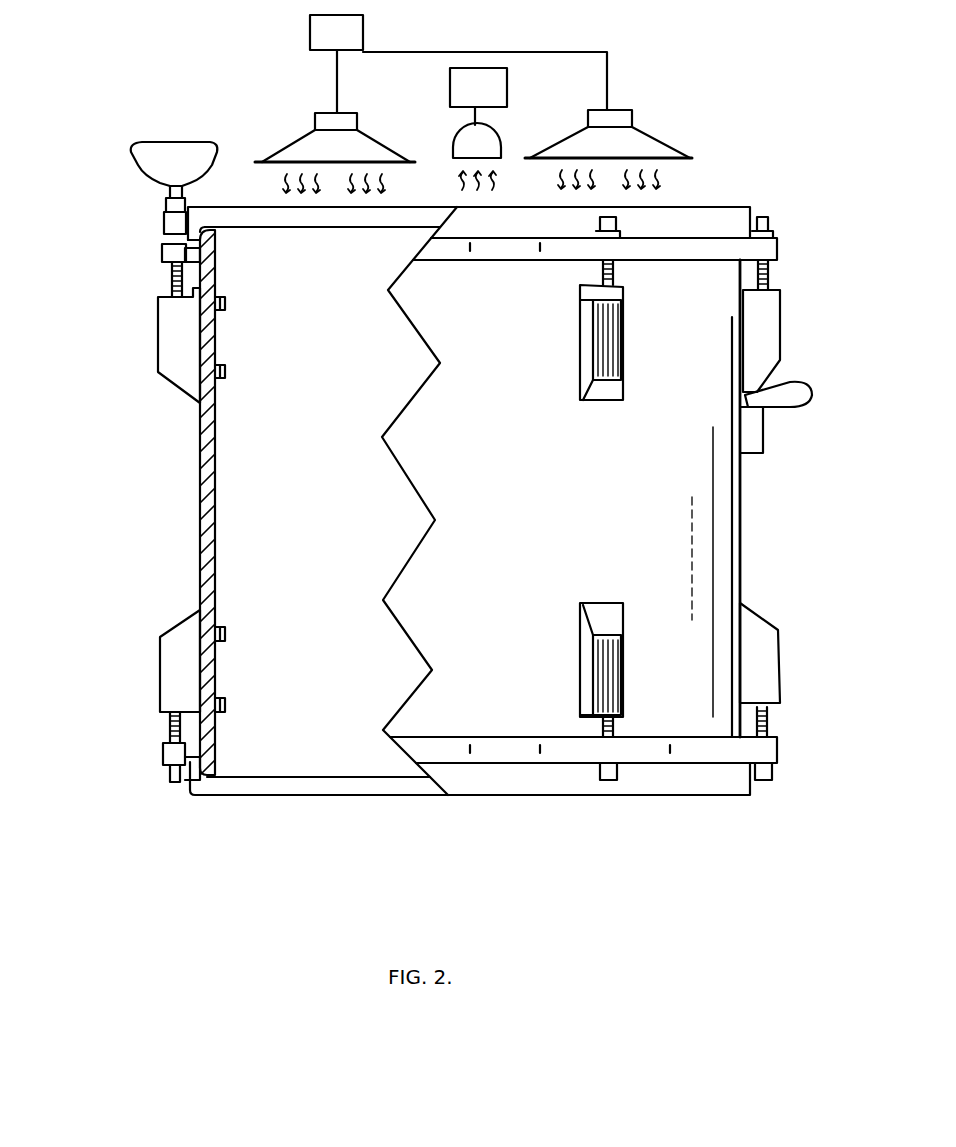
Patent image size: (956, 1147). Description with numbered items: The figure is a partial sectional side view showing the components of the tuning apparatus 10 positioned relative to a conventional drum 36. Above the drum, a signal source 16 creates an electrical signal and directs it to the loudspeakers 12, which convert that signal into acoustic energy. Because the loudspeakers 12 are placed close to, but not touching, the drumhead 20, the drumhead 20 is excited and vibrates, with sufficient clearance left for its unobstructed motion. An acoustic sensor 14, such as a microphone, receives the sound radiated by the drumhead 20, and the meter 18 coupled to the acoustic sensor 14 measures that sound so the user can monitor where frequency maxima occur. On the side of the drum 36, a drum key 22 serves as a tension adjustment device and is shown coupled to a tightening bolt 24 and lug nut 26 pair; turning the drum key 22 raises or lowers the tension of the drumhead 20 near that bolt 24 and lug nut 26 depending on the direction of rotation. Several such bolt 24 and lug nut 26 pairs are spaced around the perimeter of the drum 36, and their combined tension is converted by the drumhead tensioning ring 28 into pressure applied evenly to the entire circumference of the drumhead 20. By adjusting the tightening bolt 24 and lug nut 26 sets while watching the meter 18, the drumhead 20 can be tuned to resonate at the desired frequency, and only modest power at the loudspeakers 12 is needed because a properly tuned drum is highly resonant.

The apparatus 10 is at (200, 58).
The loudspeakers 12 is at (322, 110).
The acoustic sensor 14 is at (500, 140).
The signal source 16 is at (365, 42).
The meter 18 is at (450, 100).
The drumhead 20 is at (306, 236).
The drum key 22 is at (135, 152).
The tightening bolt 24 is at (170, 265).
The lug nut 26 is at (160, 300).
The drumhead tensioning ring 28 is at (700, 206).
The drum 36 is at (200, 535).